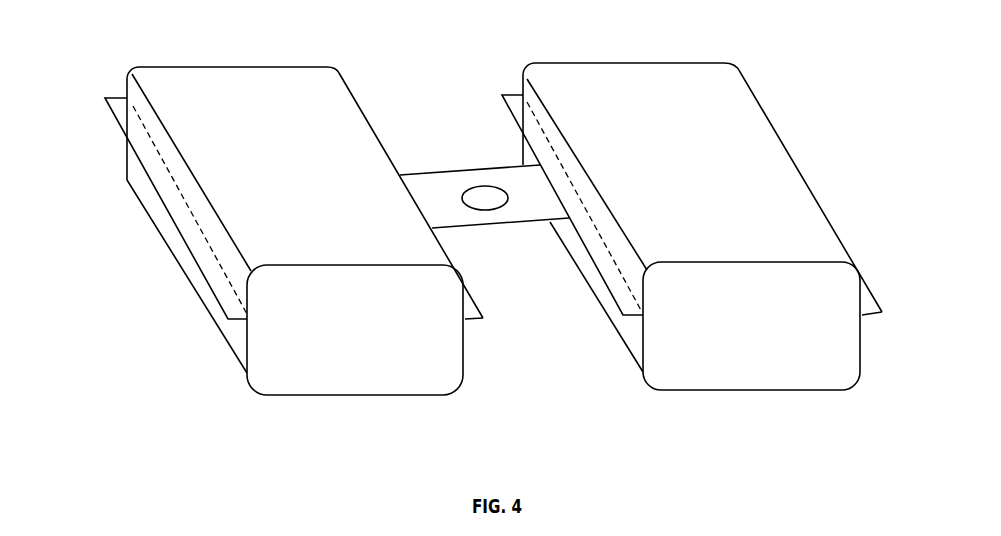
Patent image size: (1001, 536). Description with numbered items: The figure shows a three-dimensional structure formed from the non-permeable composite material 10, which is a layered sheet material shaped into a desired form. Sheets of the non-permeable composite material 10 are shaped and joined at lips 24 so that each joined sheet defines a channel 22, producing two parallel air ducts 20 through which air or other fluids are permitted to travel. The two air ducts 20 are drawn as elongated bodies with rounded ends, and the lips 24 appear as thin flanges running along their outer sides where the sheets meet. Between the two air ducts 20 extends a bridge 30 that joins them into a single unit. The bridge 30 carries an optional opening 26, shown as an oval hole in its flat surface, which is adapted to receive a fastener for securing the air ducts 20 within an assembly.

The non-permeable composite material 10 is at (486, 243).
The air duct 20 is at (203, 151).
The channel 22 is at (271, 372).
The lip 24 is at (865, 303).
The opening 26 is at (495, 212).
The bridge 30 is at (528, 197).